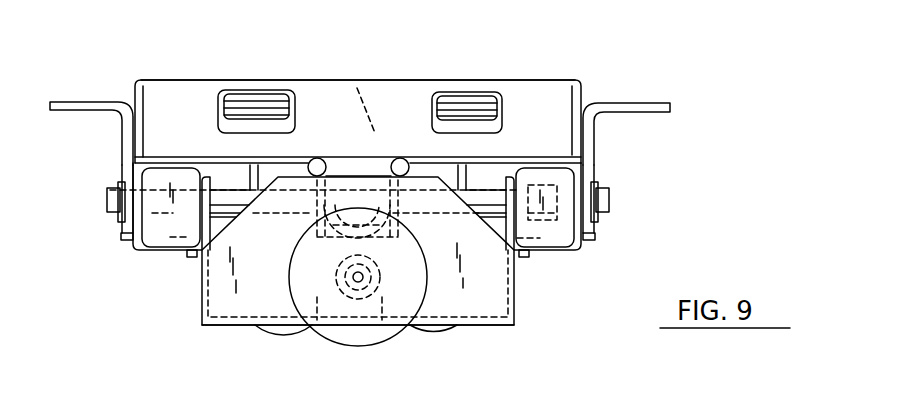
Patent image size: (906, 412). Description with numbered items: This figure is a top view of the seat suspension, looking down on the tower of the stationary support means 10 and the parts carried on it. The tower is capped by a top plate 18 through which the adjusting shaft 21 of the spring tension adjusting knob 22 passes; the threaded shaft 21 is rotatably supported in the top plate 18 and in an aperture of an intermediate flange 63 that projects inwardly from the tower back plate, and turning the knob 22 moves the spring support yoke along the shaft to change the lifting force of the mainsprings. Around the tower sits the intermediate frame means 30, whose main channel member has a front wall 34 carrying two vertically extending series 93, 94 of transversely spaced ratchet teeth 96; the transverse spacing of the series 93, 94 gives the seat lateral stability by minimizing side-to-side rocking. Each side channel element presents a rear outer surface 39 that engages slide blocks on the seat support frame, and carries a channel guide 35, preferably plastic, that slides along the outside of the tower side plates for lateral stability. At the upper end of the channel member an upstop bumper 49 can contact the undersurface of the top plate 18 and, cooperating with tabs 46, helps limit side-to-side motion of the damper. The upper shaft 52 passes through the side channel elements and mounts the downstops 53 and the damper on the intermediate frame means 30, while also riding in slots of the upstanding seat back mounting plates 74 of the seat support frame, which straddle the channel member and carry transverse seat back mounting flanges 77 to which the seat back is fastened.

The stationary support means 10 is at (515, 320).
The top plate 18 is at (493, 285).
The adjusting shaft 21 is at (350, 268).
The spring tension adjusting knob 22 is at (373, 342).
The intermediate frame means 30 is at (577, 80).
The front wall 34 is at (522, 95).
The channel guide 35 is at (180, 257).
The rear outer surface 39 is at (145, 252).
The tabs 46 is at (308, 147).
The upstop bumper 49 is at (370, 182).
The upper shaft 52 is at (607, 193).
The downstops 53 is at (157, 225).
The intermediate flange 63 is at (315, 325).
The seat back mounting plates 74 is at (122, 133).
The seat back mounting flanges 77 is at (77, 100).
The vertically extending series of ratchet teeth 93 is at (463, 85).
The vertically extending series of ratchet teeth 94 is at (227, 80).
The ratchet teeth 96 is at (250, 100).